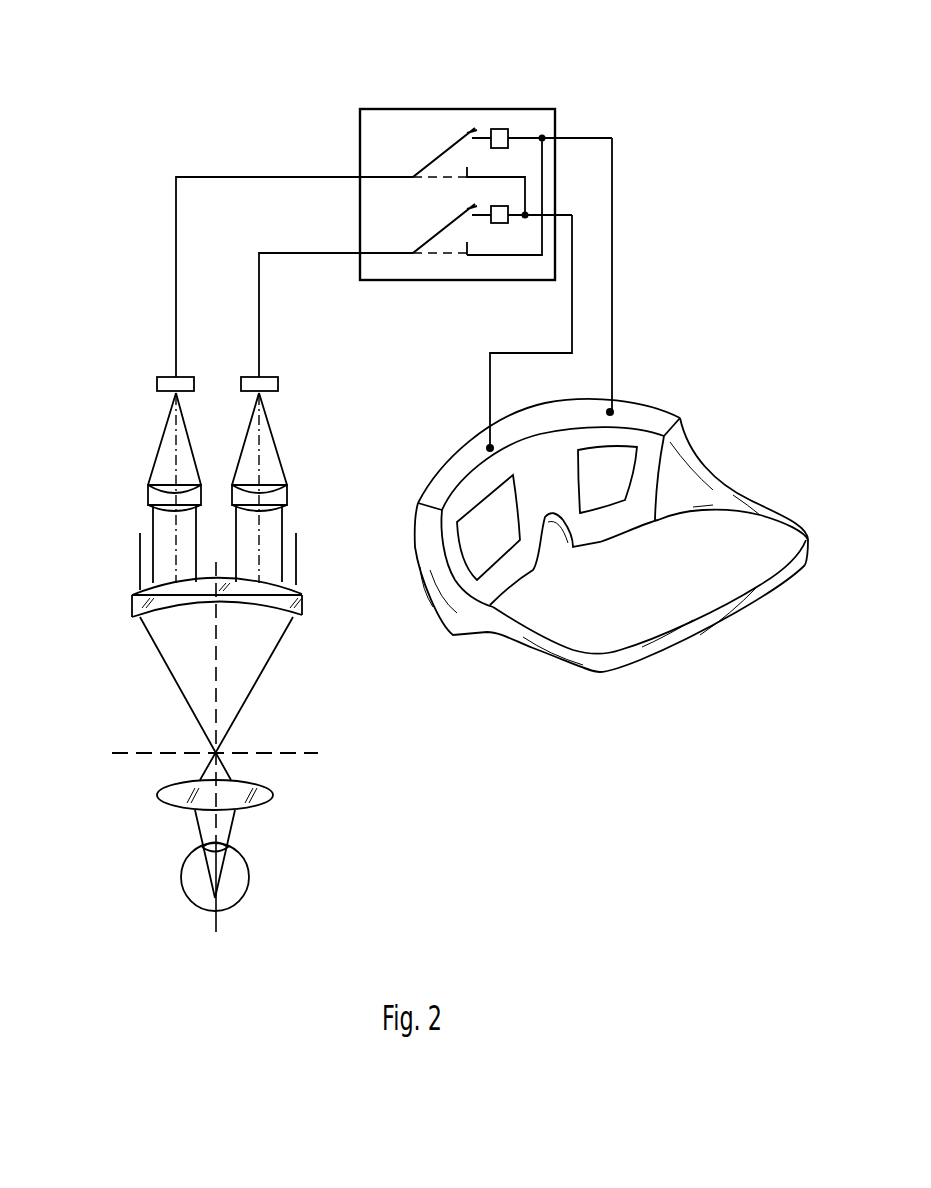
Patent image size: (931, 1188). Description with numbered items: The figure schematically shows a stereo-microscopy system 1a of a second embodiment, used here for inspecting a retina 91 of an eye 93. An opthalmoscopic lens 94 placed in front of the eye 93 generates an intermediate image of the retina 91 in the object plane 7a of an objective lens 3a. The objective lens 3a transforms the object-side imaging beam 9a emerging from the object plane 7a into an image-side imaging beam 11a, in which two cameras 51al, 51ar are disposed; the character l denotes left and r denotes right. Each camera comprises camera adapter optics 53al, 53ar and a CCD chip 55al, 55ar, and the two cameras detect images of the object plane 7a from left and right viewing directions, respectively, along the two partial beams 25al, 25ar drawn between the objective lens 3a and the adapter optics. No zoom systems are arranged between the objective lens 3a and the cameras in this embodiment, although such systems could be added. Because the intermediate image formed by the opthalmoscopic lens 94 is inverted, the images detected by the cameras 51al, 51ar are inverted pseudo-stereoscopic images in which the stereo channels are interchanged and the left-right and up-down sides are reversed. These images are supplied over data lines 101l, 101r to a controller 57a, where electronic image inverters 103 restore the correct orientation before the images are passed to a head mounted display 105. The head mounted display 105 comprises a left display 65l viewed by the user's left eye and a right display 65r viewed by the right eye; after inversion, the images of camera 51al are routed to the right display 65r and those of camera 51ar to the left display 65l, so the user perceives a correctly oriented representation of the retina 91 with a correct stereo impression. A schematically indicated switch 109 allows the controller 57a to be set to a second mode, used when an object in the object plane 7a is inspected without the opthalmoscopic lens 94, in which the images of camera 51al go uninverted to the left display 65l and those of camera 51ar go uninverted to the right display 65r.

The microscopy system 1a is at (138, 231).
The objective lens 3a is at (132, 605).
The object plane 7a is at (308, 750).
The object-side imaging beam 9a is at (170, 672).
The image-side imaging beam 11a is at (297, 578).
The left illumination beam 25al is at (152, 555).
The right illumination beam 25ar is at (283, 542).
The left camera 51al is at (142, 407).
The right camera 51ar is at (328, 408).
The camera adapter optics 53al is at (148, 488).
The camera adapter optics 53ar is at (287, 493).
The CCD chip 55al is at (167, 377).
The CCD chip 55ar is at (252, 377).
The controller 57a is at (395, 109).
The left display 65l is at (496, 542).
The right display 65r is at (610, 485).
The retina 91 is at (220, 907).
The eye 93 is at (249, 877).
The opthalmoscopic lens 94 is at (273, 795).
The data line 101l is at (237, 175).
The data line 101r is at (290, 253).
The electronic image inverter 103 is at (502, 128).
The head mounted display 105 is at (645, 402).
The switch 109 is at (441, 265).